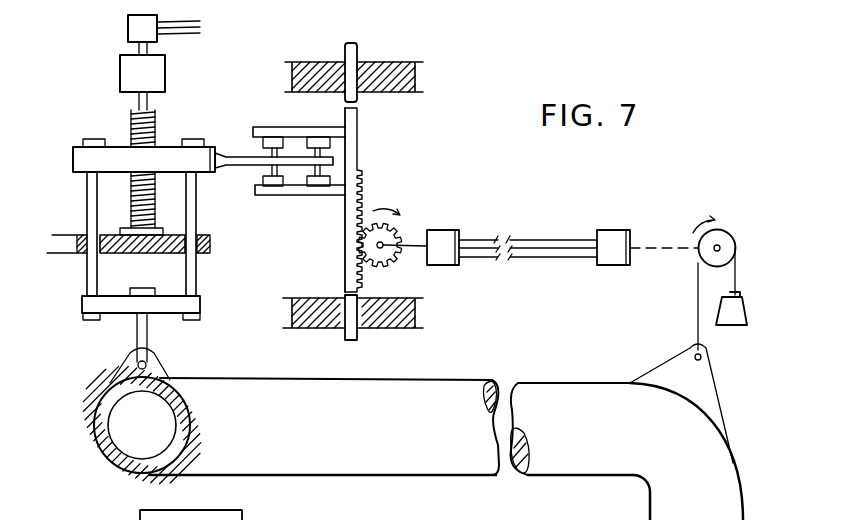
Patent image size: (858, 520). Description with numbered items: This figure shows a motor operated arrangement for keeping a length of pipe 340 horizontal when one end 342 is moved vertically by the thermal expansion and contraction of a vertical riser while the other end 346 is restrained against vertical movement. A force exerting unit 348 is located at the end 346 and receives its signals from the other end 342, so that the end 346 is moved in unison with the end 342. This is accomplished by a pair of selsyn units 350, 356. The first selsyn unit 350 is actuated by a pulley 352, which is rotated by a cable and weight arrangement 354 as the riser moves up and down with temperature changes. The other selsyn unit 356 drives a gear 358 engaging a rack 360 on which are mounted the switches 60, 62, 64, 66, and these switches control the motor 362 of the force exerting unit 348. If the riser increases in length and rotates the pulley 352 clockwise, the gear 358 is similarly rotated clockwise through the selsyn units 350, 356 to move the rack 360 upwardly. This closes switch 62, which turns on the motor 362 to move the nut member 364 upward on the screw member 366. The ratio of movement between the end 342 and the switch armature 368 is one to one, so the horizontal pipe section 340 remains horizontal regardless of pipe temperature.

The length of pipe 340 is at (373, 468).
The end of pipe 342 is at (632, 488).
The end of pipe 346 is at (125, 470).
The force exerting unit 348 is at (72, 122).
The selsyn unit 350 is at (622, 238).
The pulley 352 is at (698, 258).
The cable and weight arrangement 354 is at (698, 325).
The selsyn unit 356 is at (447, 240).
The gear 358 is at (387, 261).
The rack 360 is at (363, 198).
The motor 362 is at (128, 25).
The nut member 364 is at (82, 160).
The screw member 366 is at (155, 128).
The switch armature 368 is at (236, 166).
The switch 60 is at (273, 140).
The switch 62 is at (271, 187).
The switch 64 is at (320, 140).
The switch 66 is at (318, 187).